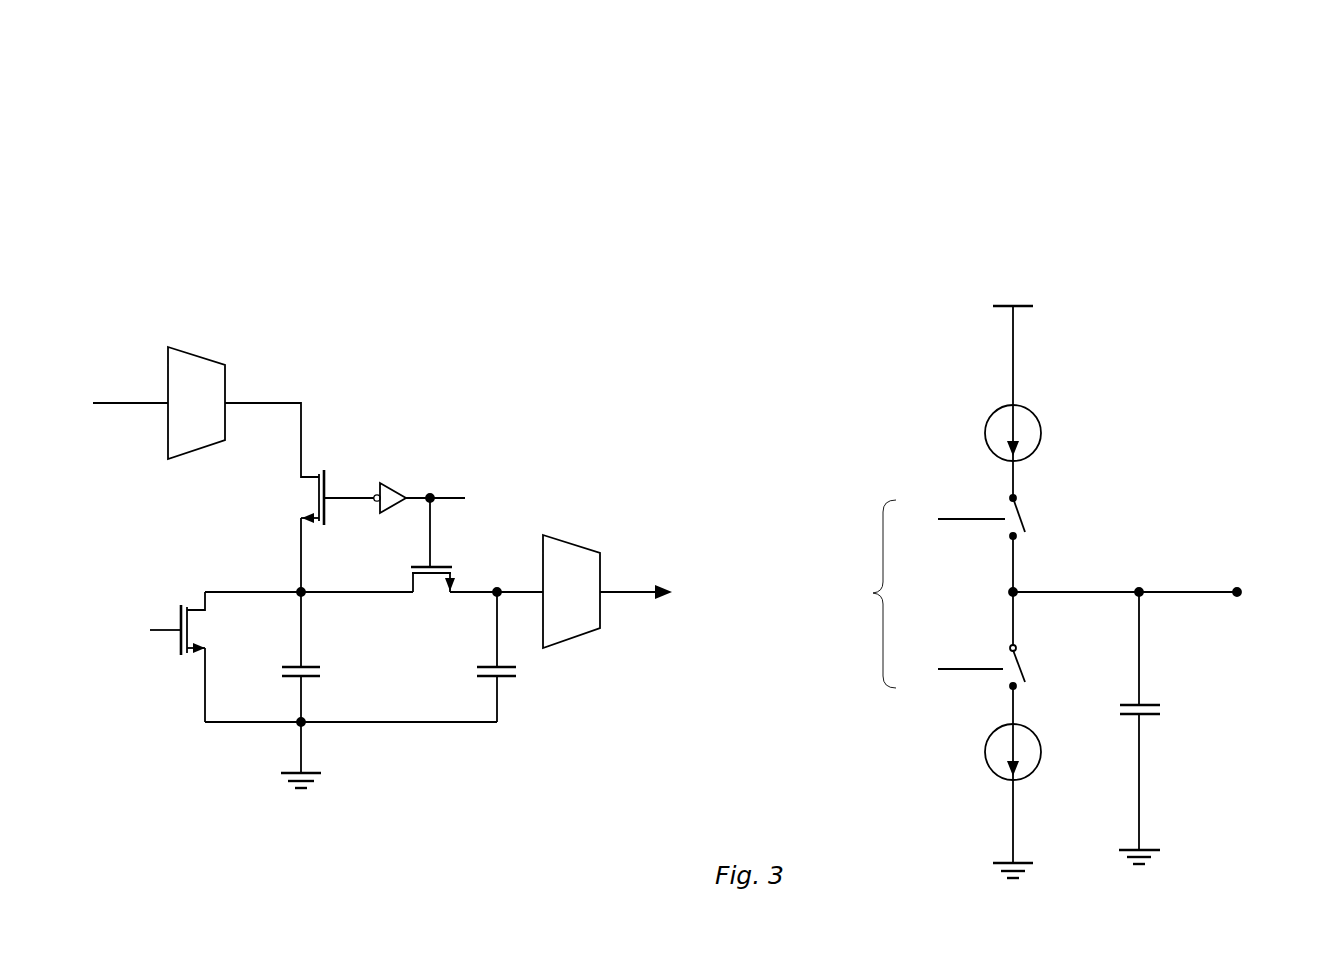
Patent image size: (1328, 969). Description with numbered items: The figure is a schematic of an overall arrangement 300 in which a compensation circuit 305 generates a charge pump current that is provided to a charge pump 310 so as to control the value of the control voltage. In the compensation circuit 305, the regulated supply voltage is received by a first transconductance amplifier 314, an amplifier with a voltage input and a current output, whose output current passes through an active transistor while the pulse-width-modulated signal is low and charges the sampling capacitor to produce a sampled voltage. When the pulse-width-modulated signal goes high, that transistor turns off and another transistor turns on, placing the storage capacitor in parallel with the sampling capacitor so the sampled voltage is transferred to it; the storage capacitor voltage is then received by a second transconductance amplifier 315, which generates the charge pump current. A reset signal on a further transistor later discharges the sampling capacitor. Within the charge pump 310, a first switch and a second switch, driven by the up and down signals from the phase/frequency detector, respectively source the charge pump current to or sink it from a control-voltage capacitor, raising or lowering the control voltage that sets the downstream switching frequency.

The charge pump circuit 300 is at (705, 80).
The compensation circuit 305 is at (288, 315).
The charge pump 310 is at (1026, 232).
The transconductance amplifier 314 is at (196, 403).
The transconductance amplifier 315 is at (571, 591).